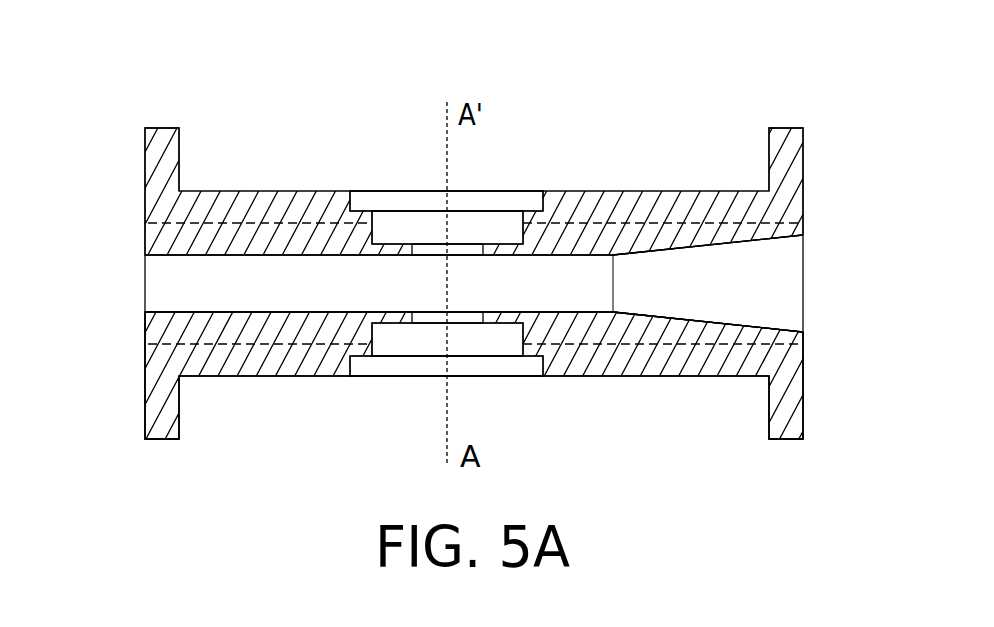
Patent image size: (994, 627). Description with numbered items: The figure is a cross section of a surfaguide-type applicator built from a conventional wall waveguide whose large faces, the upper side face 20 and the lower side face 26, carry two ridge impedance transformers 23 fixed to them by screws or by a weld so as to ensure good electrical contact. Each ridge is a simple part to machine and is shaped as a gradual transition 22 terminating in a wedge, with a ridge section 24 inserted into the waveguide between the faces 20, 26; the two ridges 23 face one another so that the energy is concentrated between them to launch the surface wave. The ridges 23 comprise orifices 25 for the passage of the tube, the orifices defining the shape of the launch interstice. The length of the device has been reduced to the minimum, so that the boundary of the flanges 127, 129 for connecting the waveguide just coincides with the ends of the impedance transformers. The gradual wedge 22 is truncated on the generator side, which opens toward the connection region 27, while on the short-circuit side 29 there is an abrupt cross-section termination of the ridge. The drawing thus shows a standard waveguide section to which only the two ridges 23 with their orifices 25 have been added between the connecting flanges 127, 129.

The upper side face 20 is at (625, 190).
The gradual transition 22 is at (645, 254).
The ridge impedance transformer 23 is at (742, 247).
The ridge section 24 is at (263, 256).
The orifice 25 is at (526, 232).
The lower side face 26 is at (613, 378).
The outlet 27 is at (814, 281).
The short-circuit side 29 is at (141, 281).
The flange 127 is at (786, 176).
The flange 129 is at (156, 176).